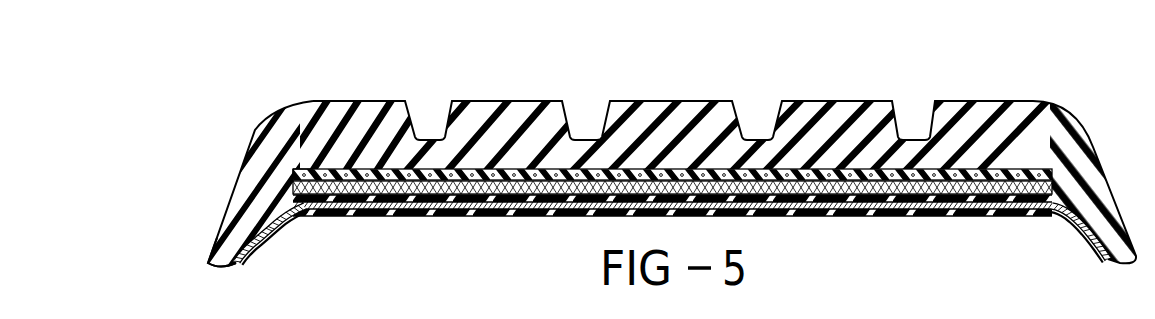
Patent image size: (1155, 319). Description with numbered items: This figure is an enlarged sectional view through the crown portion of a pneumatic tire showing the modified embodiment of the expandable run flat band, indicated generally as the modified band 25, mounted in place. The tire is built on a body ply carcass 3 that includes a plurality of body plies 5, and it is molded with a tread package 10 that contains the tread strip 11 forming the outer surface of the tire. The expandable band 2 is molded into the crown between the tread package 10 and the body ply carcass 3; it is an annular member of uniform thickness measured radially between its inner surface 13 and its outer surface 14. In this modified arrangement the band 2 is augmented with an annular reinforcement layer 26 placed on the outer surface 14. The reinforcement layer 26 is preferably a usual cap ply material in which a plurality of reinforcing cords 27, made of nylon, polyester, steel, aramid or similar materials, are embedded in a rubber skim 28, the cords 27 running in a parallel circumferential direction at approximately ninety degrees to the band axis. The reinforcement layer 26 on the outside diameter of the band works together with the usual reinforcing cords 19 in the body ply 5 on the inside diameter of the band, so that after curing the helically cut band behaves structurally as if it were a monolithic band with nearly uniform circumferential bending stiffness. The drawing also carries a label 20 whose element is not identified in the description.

The expandable run flat band 2 is at (387, 207).
The body ply carcass 3 is at (205, 244).
The body plies 5 is at (893, 207).
The tread package 10 is at (873, 92).
The tread strip 11 is at (660, 100).
The inner surface 13 is at (561, 197).
The outer surface 14 is at (503, 177).
The reinforcing cords 19 is at (511, 207).
The reinforcing fabric layer 20 is at (812, 191).
The modified embodiment of the expandable band 25 is at (274, 174).
The annular reinforcement layer 26 is at (302, 155).
The reinforcing cords 27 is at (346, 172).
The rubber skim 28 is at (387, 175).